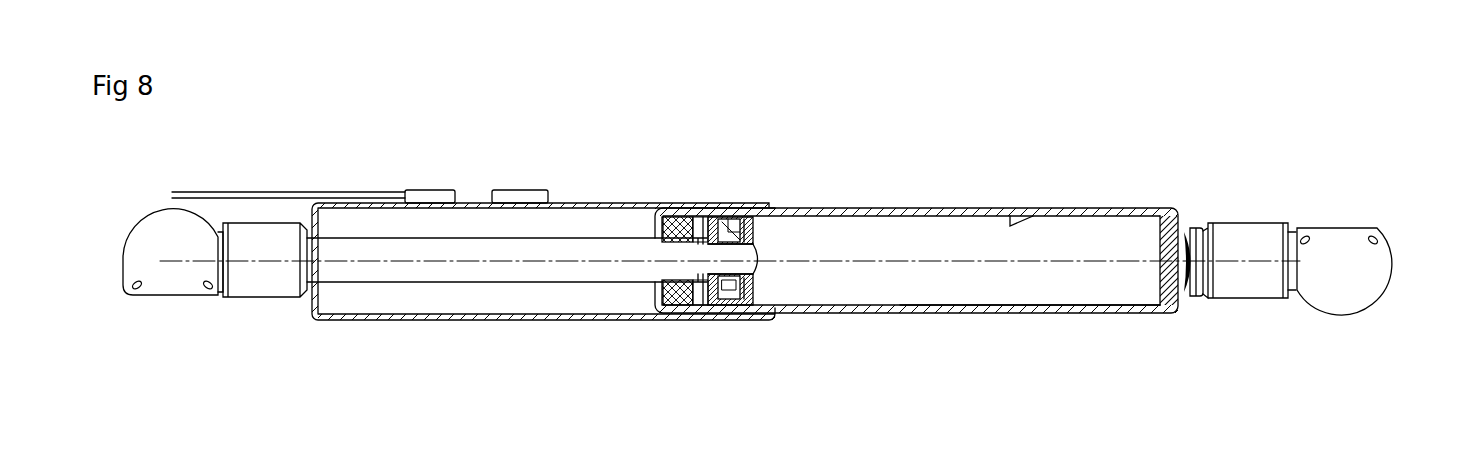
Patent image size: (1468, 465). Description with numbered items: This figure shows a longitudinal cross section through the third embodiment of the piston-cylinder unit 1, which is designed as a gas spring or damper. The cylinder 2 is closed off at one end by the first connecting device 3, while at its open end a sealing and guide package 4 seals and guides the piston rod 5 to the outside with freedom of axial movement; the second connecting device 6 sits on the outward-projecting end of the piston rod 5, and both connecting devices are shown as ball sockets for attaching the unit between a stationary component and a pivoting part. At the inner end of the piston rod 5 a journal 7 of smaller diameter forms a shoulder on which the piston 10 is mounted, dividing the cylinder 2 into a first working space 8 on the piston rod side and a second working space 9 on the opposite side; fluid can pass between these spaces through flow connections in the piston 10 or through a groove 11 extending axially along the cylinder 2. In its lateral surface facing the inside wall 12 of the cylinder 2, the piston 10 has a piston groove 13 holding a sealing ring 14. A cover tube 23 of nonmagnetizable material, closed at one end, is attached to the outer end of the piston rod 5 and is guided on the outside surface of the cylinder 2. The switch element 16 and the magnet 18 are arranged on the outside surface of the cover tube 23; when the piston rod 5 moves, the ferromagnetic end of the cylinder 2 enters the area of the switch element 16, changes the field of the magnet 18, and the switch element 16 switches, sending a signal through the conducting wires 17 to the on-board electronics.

The piston-cylinder unit 1 is at (1374, 75).
The cylinder 2 is at (1117, 307).
The first connecting device 3 is at (1342, 278).
The sealing and guide package 4 is at (673, 290).
The piston rod 5 is at (467, 270).
The second connecting device 6 is at (170, 255).
The journal 7 is at (727, 265).
The first working space 8 is at (700, 232).
The second working space 9 is at (1092, 235).
The piston 10 is at (748, 292).
The groove 11 is at (1060, 307).
The inside wall 12 is at (1011, 222).
The piston groove 13 is at (724, 222).
The sealing ring 14 is at (733, 220).
The switch element 16 is at (432, 197).
The conducting wires 17 is at (292, 197).
The magnet 18 is at (527, 197).
The cover tube 23 is at (630, 204).